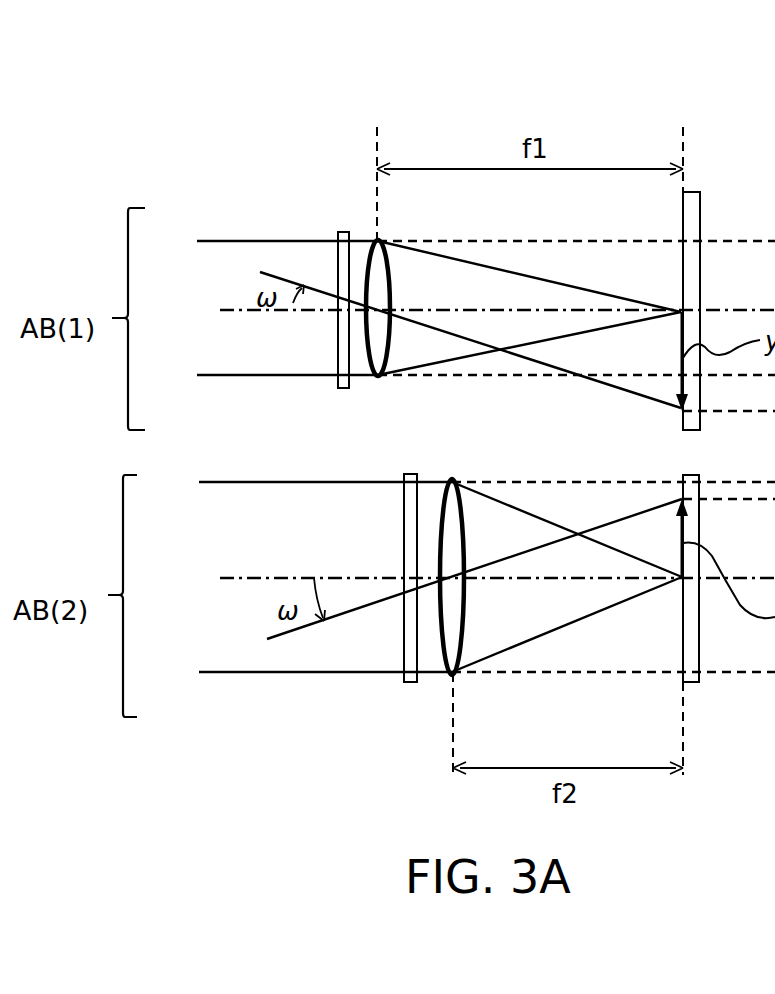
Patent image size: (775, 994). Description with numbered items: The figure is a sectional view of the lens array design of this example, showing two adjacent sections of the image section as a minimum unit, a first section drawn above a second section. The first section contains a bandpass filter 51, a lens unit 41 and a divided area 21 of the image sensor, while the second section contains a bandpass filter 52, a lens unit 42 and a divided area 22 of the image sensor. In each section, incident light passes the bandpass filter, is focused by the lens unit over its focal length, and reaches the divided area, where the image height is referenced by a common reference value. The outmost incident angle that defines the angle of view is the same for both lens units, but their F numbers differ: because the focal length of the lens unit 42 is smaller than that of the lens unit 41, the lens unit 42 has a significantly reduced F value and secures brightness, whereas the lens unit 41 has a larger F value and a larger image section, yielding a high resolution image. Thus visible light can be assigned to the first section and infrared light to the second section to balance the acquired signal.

The divided area 21 is at (693, 192).
The divided area 22 is at (688, 682).
The lens unit 41 is at (377, 233).
The lens unit 42 is at (452, 674).
The bandpass filter 51 is at (343, 233).
The bandpass filter 52 is at (410, 682).